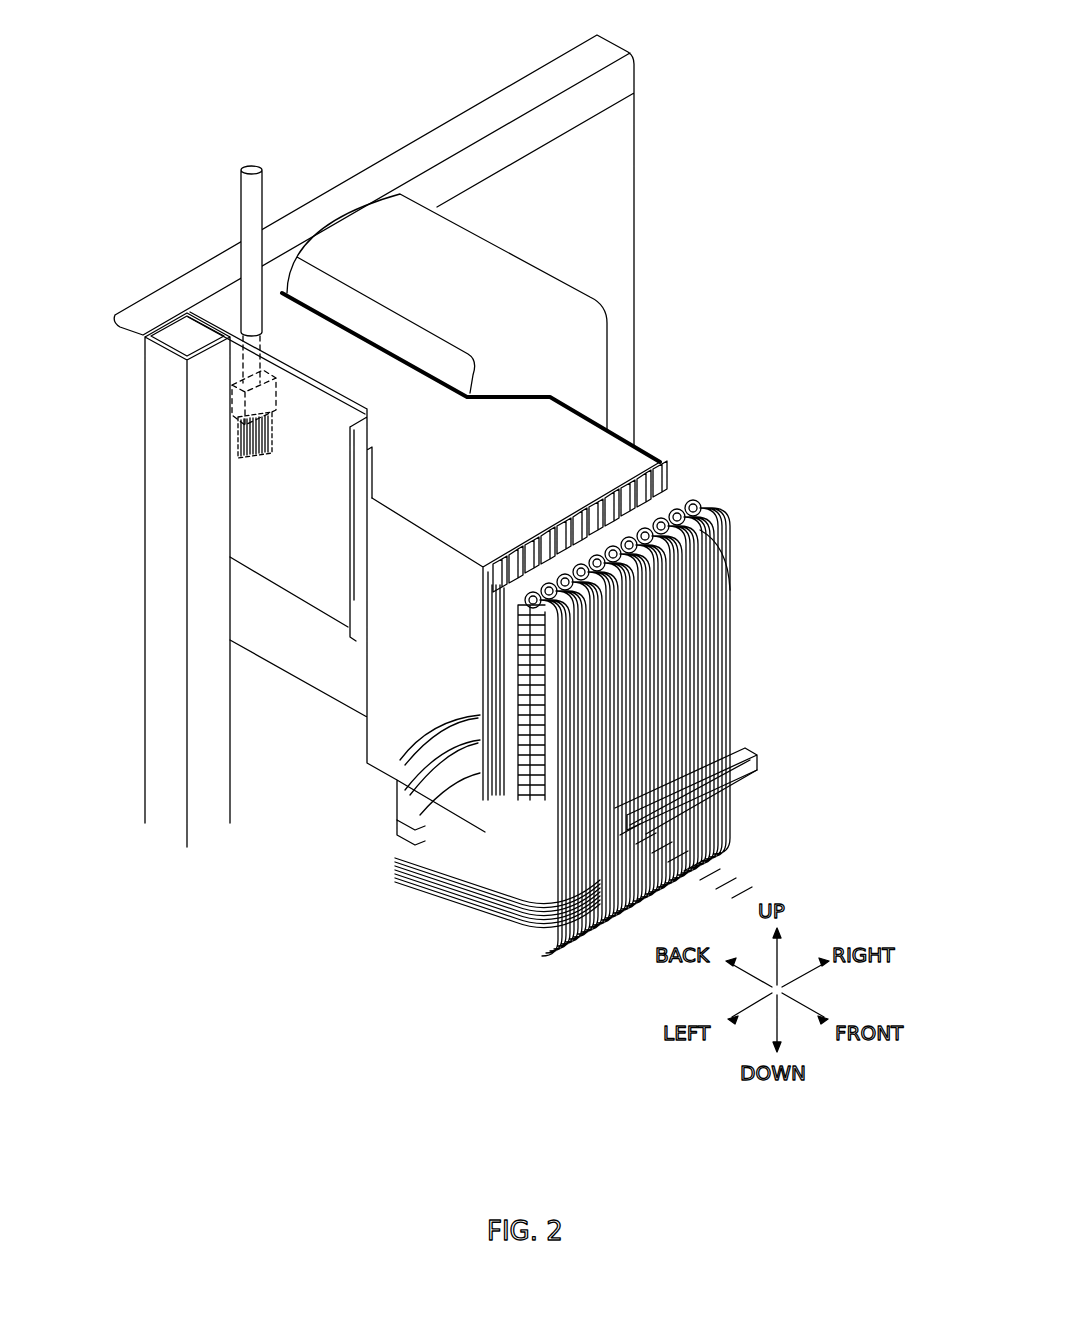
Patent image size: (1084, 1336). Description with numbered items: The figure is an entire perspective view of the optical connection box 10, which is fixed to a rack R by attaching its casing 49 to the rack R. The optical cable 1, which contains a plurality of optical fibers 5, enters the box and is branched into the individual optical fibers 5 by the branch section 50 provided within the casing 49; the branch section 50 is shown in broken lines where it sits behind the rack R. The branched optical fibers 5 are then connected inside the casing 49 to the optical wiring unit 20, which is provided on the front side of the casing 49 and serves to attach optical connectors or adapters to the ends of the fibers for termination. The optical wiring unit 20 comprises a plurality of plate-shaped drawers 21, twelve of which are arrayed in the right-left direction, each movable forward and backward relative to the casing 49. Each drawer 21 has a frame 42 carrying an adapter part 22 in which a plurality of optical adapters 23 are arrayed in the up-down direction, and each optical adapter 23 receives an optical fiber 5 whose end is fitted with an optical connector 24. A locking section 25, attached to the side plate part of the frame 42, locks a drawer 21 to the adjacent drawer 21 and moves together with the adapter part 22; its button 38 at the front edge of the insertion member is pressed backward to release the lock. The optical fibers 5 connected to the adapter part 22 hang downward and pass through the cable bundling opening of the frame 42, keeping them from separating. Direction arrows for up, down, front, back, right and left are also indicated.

The optical cable 1 is at (247, 213).
The optical fiber 5 is at (240, 440).
The optical connection box 10 is at (760, 183).
The optical wiring unit 20 is at (788, 628).
The drawer 21 is at (668, 485).
The adapter part 22 is at (440, 765).
The optical adapter 23 is at (430, 791).
The optical connector 24 is at (505, 917).
The locking section 25 is at (695, 522).
The button 38 is at (676, 728).
The frame 42 is at (612, 610).
The casing 49 is at (652, 445).
The branch section 50 is at (237, 405).
The rack R is at (455, 130).